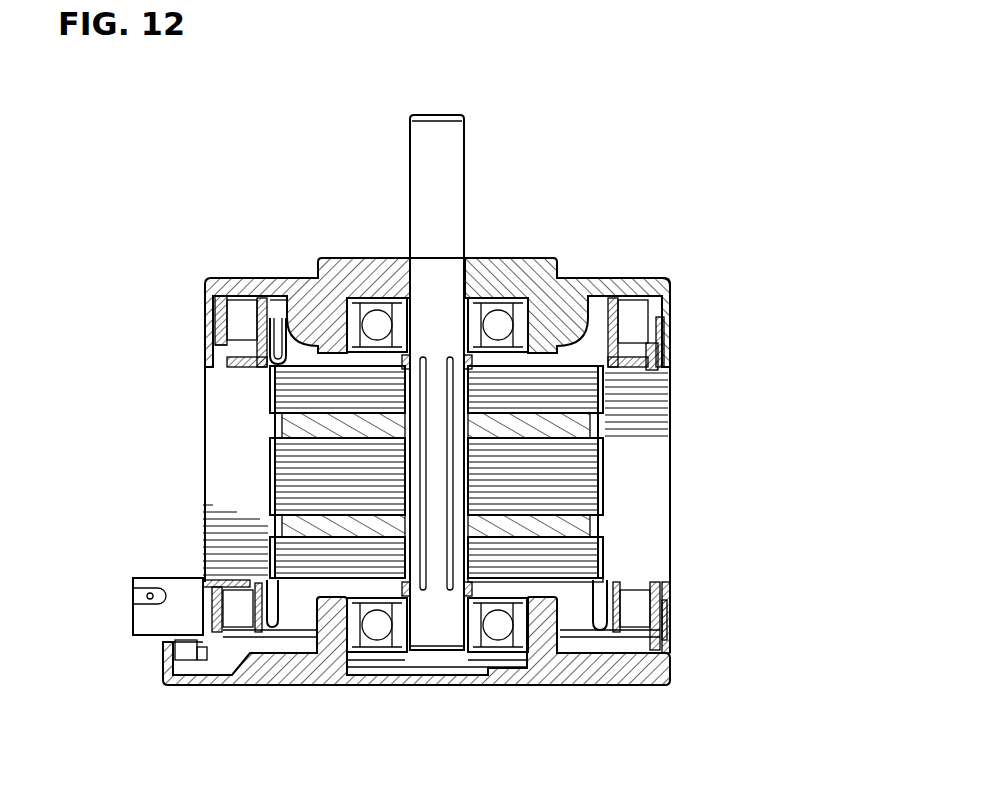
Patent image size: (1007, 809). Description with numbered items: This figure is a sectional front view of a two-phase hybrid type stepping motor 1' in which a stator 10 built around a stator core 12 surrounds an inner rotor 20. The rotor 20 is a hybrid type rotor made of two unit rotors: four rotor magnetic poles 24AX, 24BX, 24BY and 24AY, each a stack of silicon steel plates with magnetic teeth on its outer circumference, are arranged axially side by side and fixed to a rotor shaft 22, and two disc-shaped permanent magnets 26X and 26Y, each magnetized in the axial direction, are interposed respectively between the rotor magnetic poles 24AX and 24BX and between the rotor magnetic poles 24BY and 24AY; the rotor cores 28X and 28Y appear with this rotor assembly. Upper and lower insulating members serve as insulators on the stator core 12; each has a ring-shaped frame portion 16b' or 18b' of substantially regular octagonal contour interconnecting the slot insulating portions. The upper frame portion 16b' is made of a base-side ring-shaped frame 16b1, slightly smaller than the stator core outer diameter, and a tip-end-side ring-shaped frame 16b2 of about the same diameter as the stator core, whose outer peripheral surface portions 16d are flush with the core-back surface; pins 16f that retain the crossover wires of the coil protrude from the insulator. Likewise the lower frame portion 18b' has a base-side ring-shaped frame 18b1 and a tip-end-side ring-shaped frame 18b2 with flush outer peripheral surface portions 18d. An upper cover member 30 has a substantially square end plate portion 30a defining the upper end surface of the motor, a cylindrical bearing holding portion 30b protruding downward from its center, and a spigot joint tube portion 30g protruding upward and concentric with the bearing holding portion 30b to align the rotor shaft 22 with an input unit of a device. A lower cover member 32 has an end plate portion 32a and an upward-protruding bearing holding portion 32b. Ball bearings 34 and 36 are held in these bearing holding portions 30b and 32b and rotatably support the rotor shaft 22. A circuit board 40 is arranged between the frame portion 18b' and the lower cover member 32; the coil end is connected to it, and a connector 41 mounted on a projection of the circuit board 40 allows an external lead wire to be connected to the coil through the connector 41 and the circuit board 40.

The stepping motor 1' is at (92, 104).
The stator 10 is at (195, 457).
The stator core 12 is at (205, 497).
The outer peripheral surface portions 16d is at (205, 340).
The pins 16f is at (670, 282).
The frame portion 16b' is at (699, 332).
The base-side ring-shaped frame 16b1 is at (660, 350).
The tip-end-side ring-shaped frame 16b2 is at (665, 328).
The frame portion 18b' is at (720, 629).
The base-side ring-shaped frame 18b1 is at (674, 599).
The tip-end-side ring-shaped frame 18b2 is at (674, 622).
The outer peripheral surface portions 18d is at (672, 635).
The rotor 20 is at (282, 300).
The rotor shaft 22 is at (457, 195).
The rotor magnetic pole 24AX is at (270, 395).
The rotor magnetic pole 24BX is at (270, 450).
The rotor magnetic pole 24AY is at (590, 554).
The rotor magnetic pole 24BY is at (600, 492).
The permanent magnet 26X is at (612, 427).
The permanent magnet 26Y is at (270, 527).
The rotor core 28X is at (567, 372).
The rotor core 28Y is at (567, 577).
The upper cover member 30 is at (650, 305).
The end plate portion 30a is at (250, 295).
The bearing holding portion 30b is at (297, 362).
The spigot joint tube portion 30g is at (540, 275).
The lower cover member 32 is at (205, 688).
The end plate portion 32a is at (535, 668).
The bearing holding portion 32b is at (317, 598).
The bearing 34 is at (378, 322).
The bearing 36 is at (378, 628).
The circuit board 40 is at (178, 655).
The connector 41 is at (178, 620).